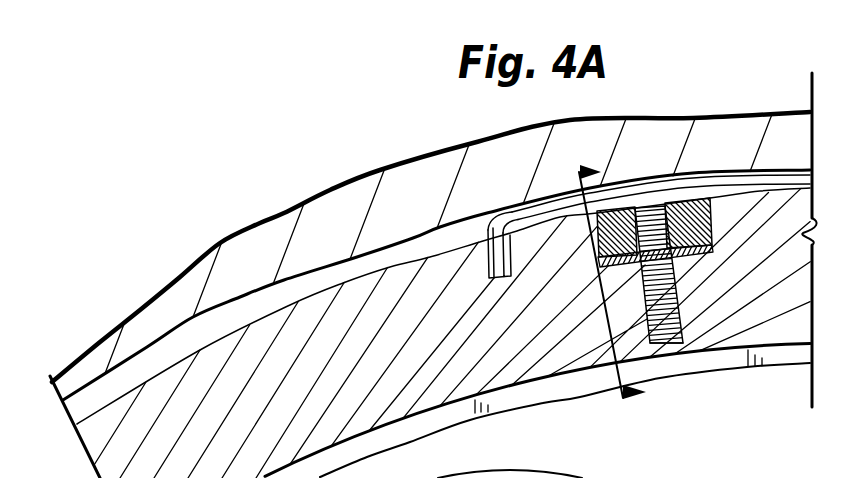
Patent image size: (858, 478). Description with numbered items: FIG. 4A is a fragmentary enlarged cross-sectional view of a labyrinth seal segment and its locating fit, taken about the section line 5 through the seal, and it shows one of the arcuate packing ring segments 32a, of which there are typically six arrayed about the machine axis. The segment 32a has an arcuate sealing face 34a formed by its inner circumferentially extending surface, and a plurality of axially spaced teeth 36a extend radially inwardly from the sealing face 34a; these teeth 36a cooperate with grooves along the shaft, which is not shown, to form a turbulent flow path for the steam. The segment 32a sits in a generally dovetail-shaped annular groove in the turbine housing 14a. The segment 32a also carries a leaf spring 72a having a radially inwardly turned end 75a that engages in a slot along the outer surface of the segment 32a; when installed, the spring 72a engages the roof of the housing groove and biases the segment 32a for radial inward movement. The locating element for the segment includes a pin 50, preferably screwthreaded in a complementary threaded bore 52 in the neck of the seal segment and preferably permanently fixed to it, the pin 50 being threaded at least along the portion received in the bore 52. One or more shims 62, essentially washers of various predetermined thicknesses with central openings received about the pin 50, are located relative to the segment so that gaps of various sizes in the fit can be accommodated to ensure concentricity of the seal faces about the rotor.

The turbine housing 14a is at (717, 138).
The arcuate sealing face 34a is at (552, 383).
The arcuate packing ring segment 32a is at (582, 347).
The teeth 36a is at (430, 420).
The leaf spring 72a is at (538, 197).
The radially inwardly turned end 75a is at (490, 247).
The shims 62 is at (697, 253).
The threaded bore 52 is at (678, 315).
The pin 50 is at (680, 313).
The section line 5- 5 is at (618, 277).